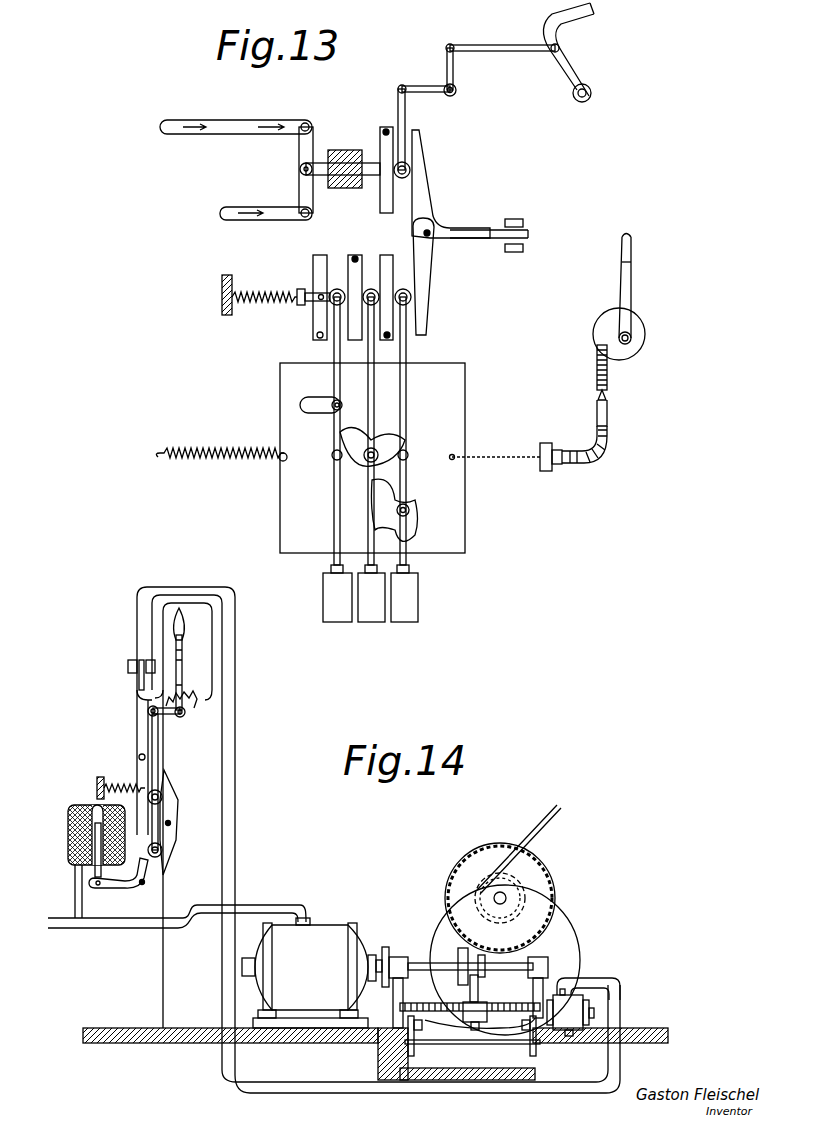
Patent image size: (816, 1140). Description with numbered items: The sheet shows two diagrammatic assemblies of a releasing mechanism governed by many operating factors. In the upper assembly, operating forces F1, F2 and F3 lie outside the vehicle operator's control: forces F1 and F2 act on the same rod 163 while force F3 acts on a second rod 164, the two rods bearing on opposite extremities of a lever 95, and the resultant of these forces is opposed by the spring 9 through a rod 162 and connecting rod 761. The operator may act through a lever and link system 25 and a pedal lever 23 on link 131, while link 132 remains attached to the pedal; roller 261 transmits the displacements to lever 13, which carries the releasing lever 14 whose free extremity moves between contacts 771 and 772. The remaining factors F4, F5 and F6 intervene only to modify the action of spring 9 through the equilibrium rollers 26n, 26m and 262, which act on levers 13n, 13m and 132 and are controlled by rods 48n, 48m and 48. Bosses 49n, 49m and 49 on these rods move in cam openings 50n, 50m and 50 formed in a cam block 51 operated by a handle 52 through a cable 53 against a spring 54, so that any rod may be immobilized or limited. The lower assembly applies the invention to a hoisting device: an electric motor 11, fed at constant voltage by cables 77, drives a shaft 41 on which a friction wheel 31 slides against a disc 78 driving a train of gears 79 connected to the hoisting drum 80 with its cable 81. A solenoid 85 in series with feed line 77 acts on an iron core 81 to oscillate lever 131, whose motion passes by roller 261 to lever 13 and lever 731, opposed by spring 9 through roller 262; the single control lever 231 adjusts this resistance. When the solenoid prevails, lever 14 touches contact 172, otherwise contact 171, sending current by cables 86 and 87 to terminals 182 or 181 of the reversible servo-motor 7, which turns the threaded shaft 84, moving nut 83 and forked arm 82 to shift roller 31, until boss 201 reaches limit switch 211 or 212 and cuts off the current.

In FIG. 13, the rod 163 is at (255, 126).
In FIG. 13, the operating factor F1 is at (196, 126).
In FIG. 13, the operating factor F2 is at (297, 125).
In FIG. 13, the operating factor F3 is at (248, 212).
In FIG. 13, the operating factor F4 is at (412, 601).
In FIG. 13, the operating factor F5 is at (372, 612).
In FIG. 13, the operating factor F6 is at (332, 602).
In FIG. 13, the lever 95 is at (308, 150).
In FIG. 13, the second rod 164 is at (272, 212).
In FIG. 13, the rod 761 is at (372, 176).
In FIG. 13, the link 131 is at (384, 138).
In FIG. 13, the equilibrium roller 261 is at (410, 164).
In FIG. 14, the equilibrium roller 261 is at (162, 852).
In FIG. 13, the lever and link system 25 is at (453, 72).
In FIG. 13, the lever 23 is at (570, 68).
In FIG. 13, the lever 13 is at (424, 200).
In FIG. 14, the lever 13 is at (170, 812).
In FIG. 13, the releasing lever 14 is at (468, 232).
In FIG. 14, the releasing lever 14 is at (137, 735).
In FIG. 13, the contact 771 is at (524, 222).
In FIG. 13, the contact 772 is at (520, 252).
In FIG. 13, the link 132 is at (428, 268).
In FIG. 13, the lever 13n is at (316, 262).
In FIG. 13, the lever 13m is at (356, 270).
In FIG. 13, the equilibrium roller 26n is at (335, 289).
In FIG. 13, the equilibrium roller 26m is at (372, 289).
In FIG. 13, the equilibrium roller 262 is at (412, 300).
In FIG. 14, the equilibrium roller 262 is at (160, 793).
In FIG. 13, the rod 162 is at (302, 292).
In FIG. 13, the spring 9 is at (262, 302).
In FIG. 14, the spring 9 is at (122, 786).
In FIG. 13, the cam block 51 is at (466, 414).
In FIG. 14, the cam block 51 is at (520, 890).
In FIG. 13, the cam opening 50n is at (305, 398).
In FIG. 13, the boss 49n is at (332, 402).
In FIG. 13, the rod 48n is at (340, 378).
In FIG. 13, the rod 48m is at (372, 380).
In FIG. 13, the rod 48 is at (405, 416).
In FIG. 13, the cam opening 50m is at (387, 420).
In FIG. 13, the boss 49m is at (378, 455).
In FIG. 13, the cam opening 50 is at (432, 532).
In FIG. 13, the boss 49 is at (410, 510).
In FIG. 13, the spring 54 is at (208, 452).
In FIG. 13, the cable 53 is at (607, 440).
In FIG. 13, the handle 52 is at (628, 322).
In FIG. 14, the cable 86 is at (237, 782).
In FIG. 14, the cable 87 is at (258, 1092).
In FIG. 14, the cables 77 is at (130, 930).
In FIG. 14, the contact 172 is at (150, 659).
In FIG. 14, the contact 171 is at (128, 665).
In FIG. 14, the lever 231 is at (185, 672).
In FIG. 14, the solenoid 85 is at (78, 822).
In FIG. 14, the iron core 81 is at (95, 848).
In FIG. 14, the lever 731 is at (148, 870).
In FIG. 14, the electric motor 11 is at (320, 945).
In FIG. 14, the shaft 41 is at (385, 948).
In FIG. 14, the friction wheel 31 is at (447, 962).
In FIG. 14, the hoisting drum 80 is at (465, 896).
In FIG. 14, the train of gears 79 is at (555, 890).
In FIG. 14, the disc 78 is at (560, 942).
In FIG. 14, the forked arm 82 is at (488, 994).
In FIG. 14, the threaded shaft 84 is at (445, 1012).
In FIG. 14, the nut 83 is at (500, 1045).
In FIG. 14, the switch 212 is at (411, 1058).
In FIG. 14, the switch 211 is at (545, 1060).
In FIG. 14, the boss 201 is at (478, 1032).
In FIG. 14, the reversible electric motor 7 is at (570, 1012).
In FIG. 14, the terminal 182 is at (590, 978).
In FIG. 14, the terminal 181 is at (580, 988).